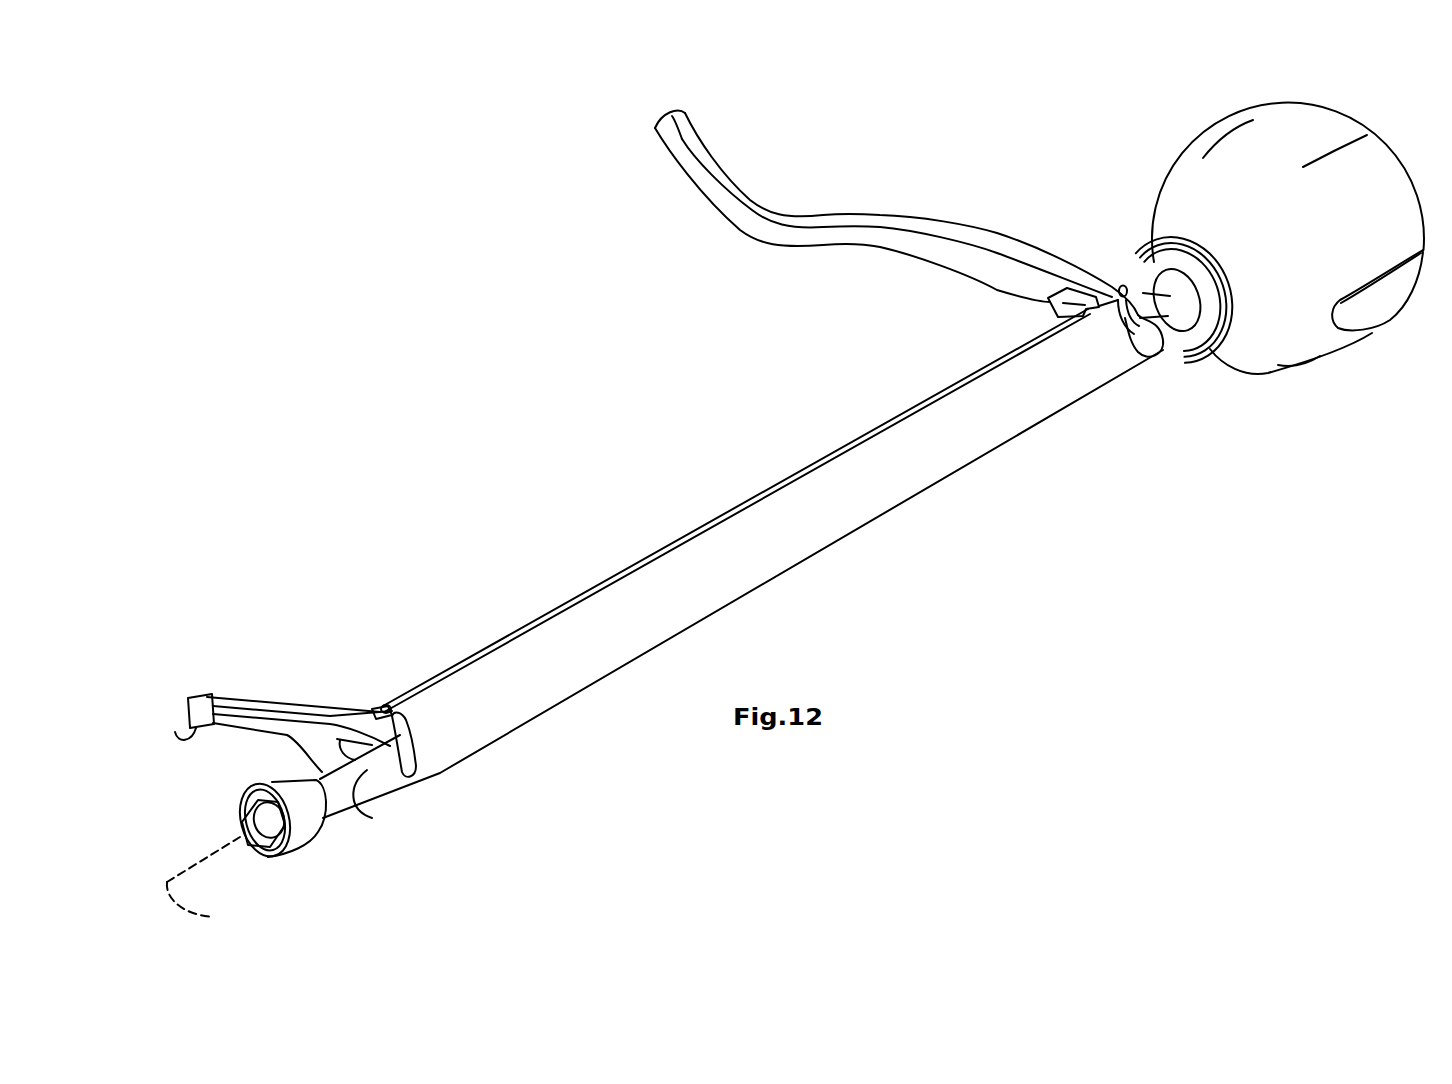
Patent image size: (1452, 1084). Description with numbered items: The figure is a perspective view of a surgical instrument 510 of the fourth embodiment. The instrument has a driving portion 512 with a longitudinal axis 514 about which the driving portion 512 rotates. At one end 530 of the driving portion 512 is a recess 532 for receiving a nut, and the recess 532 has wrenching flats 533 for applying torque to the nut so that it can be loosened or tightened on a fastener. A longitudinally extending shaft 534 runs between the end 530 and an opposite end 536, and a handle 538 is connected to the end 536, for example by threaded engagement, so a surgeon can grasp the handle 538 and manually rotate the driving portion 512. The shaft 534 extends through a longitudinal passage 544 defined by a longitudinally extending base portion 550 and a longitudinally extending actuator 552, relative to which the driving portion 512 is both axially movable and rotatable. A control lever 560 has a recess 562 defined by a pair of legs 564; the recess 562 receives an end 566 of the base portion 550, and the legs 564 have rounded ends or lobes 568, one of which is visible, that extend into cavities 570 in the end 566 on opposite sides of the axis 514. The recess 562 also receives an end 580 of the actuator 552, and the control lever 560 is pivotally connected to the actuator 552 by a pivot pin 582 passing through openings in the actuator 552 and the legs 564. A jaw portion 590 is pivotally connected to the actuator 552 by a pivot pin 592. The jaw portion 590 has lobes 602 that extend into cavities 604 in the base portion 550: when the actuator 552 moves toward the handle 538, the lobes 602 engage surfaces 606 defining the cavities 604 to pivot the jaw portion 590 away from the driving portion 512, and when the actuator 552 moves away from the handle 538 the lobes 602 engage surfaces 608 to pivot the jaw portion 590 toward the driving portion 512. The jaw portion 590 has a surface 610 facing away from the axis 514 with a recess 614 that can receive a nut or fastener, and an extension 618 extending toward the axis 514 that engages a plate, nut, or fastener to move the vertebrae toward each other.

The surgical instrument 510 is at (563, 172).
The driving portion 512 is at (320, 838).
The longitudinal axis 514 is at (213, 885).
The end 530 is at (279, 782).
The recess 532 is at (260, 812).
The wrenching flats 533 is at (246, 845).
The shaft 534 is at (339, 776).
The end 536 is at (1160, 262).
The handle 538 is at (1297, 120).
The longitudinal passage 544 is at (330, 820).
The base portion 550 is at (864, 542).
The actuator 552 is at (775, 474).
The control lever 560 is at (674, 115).
The recess 562 is at (1053, 315).
The legs 564 is at (1050, 333).
The end 566 is at (1172, 340).
The lobes 568 is at (1165, 345).
The cavities 570 is at (1127, 336).
The end 580 is at (1083, 318).
The pivot pin 582 is at (1120, 285).
The jaw portion 590 is at (280, 698).
The pivot pin 592 is at (388, 712).
The lobes 602 is at (413, 768).
The cavities 604 is at (397, 790).
The surfaces 606 is at (420, 735).
The surfaces 608 is at (393, 708).
The surface 610 is at (243, 690).
The recess 614 is at (193, 697).
The extension 618 is at (188, 740).